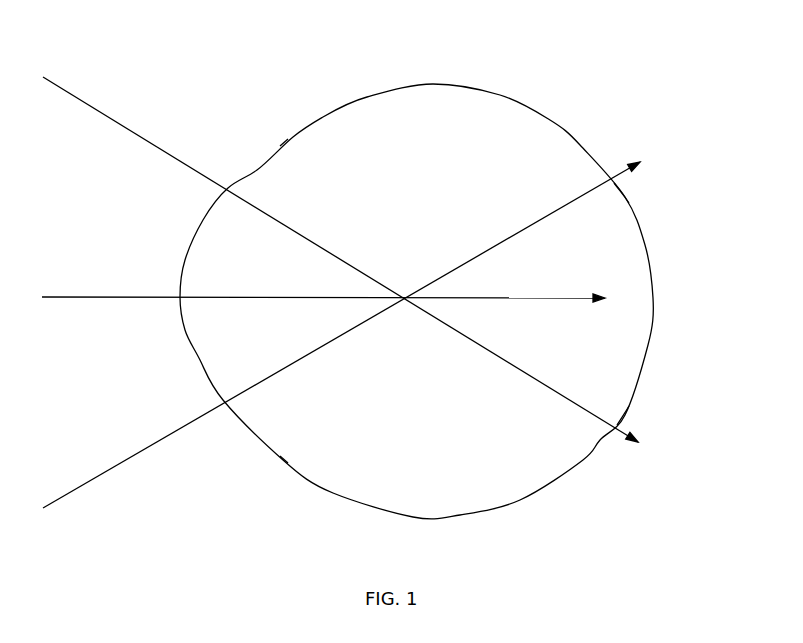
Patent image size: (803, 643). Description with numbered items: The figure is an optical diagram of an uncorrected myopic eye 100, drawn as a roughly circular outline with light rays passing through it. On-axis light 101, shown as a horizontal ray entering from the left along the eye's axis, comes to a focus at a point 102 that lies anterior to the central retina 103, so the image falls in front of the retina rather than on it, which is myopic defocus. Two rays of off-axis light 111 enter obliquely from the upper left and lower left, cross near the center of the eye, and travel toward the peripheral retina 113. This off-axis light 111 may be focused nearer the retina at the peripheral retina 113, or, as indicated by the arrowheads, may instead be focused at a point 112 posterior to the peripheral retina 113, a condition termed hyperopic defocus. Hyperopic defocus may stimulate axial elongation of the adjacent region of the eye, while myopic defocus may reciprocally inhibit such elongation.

The uncorrected myopic eye 100 is at (264, 22).
The on-axis light 101 is at (82, 297).
The point 102 is at (605, 298).
The central retina 103 is at (653, 298).
The off-axis light 111 is at (102, 112).
The point 112 is at (640, 162).
The peripheral retina 113 is at (625, 197).